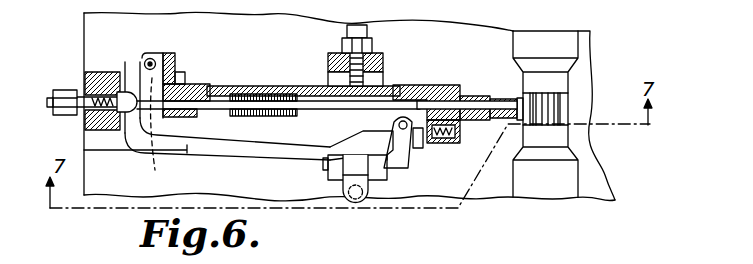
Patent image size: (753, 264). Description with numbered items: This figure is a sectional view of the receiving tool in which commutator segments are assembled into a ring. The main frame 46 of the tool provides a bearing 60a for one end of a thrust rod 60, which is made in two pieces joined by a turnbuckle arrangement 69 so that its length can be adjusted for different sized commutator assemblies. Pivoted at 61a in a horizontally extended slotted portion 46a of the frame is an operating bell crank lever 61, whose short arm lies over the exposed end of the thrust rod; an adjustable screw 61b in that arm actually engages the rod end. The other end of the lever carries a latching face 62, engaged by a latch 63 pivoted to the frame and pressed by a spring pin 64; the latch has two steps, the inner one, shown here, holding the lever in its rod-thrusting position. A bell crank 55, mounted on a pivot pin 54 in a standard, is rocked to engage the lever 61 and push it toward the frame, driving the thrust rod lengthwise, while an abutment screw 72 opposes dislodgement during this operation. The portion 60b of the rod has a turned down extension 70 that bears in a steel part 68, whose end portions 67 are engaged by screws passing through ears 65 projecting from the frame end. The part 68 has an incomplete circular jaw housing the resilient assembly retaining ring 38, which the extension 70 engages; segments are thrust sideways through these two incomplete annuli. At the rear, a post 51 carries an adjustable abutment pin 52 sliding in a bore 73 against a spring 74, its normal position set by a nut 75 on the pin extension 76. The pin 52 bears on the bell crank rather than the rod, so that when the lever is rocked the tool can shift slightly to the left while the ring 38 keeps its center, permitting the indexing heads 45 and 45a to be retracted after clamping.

The assembly retaining ring 38 is at (570, 97).
The indexing head 45 is at (572, 48).
The indexing head 45a is at (573, 189).
The tool frame 46 is at (287, 85).
The slotted portion of frame 46a is at (174, 63).
The post 51 is at (97, 71).
The abutment pin 52 is at (124, 118).
The pivot pin 54 is at (323, 172).
The bell crank 55 is at (372, 186).
The thrust rod 60 is at (206, 116).
The bearing 60a is at (197, 83).
The portion of thrust rod 60b is at (353, 113).
The operating bell crank lever 61 is at (206, 157).
The pivot 61a is at (134, 64).
The adjustable screw 61b is at (174, 131).
The latching face 62 is at (322, 154).
The latch 63 is at (409, 168).
The spring pin 64 is at (421, 147).
The ears 65 is at (461, 86).
The end portions of steel part 67 is at (440, 86).
The steel part 68 is at (505, 98).
The turnbuckle arrangement 69 is at (252, 111).
The turned down extension 70 is at (480, 118).
The abutment screw 72 is at (373, 55).
The bore 73 is at (108, 124).
The spring 74 is at (99, 87).
The nut 75 is at (56, 93).
The pin extension 76 is at (78, 112).